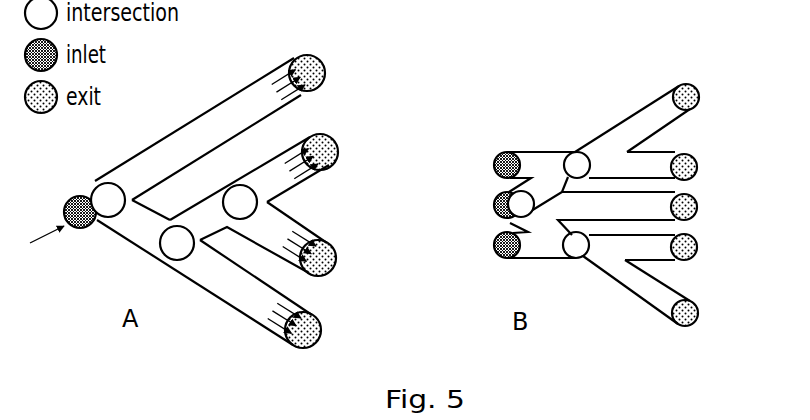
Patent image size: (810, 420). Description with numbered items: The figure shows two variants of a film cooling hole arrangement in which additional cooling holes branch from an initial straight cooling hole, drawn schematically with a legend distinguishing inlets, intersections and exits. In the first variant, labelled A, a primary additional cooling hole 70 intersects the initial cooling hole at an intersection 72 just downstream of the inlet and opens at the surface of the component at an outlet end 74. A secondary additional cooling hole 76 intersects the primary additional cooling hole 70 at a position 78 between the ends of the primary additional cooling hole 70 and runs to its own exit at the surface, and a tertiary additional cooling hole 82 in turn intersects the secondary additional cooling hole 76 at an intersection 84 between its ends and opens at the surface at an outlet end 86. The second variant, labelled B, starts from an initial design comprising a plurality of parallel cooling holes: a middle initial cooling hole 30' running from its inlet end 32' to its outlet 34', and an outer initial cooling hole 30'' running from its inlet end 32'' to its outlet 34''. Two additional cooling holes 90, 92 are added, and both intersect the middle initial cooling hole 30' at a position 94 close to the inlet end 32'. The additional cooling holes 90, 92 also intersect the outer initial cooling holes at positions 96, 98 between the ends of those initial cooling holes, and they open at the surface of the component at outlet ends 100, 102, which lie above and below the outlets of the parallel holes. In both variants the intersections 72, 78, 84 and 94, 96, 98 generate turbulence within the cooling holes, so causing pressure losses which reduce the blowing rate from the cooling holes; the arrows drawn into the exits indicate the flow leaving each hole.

The primary additional cooling hole 70 is at (222, 300).
The intersection 72 is at (100, 191).
The outlet end 74 is at (322, 345).
The secondary additional cooling hole 76 is at (256, 168).
The intersection position 78 is at (157, 246).
The tertiary additional cooling hole 82 is at (296, 221).
The intersection 84 is at (238, 188).
The outlet end 86 is at (335, 273).
The additional cooling hole 90 is at (644, 107).
The additional cooling hole 92 is at (647, 304).
The intersection position 94 is at (526, 191).
The intersection 96 is at (576, 158).
The intersection 98 is at (572, 258).
The outlet end 100 is at (699, 93).
The outlet end 102 is at (698, 325).
The inlet end 32' is at (481, 189).
The inlet end 32'' is at (506, 232).
The middle initial cooling hole 30' is at (663, 200).
The outer initial cooling hole 30'' is at (682, 245).
The outlet 34' is at (722, 211).
The outlet 34'' is at (721, 262).